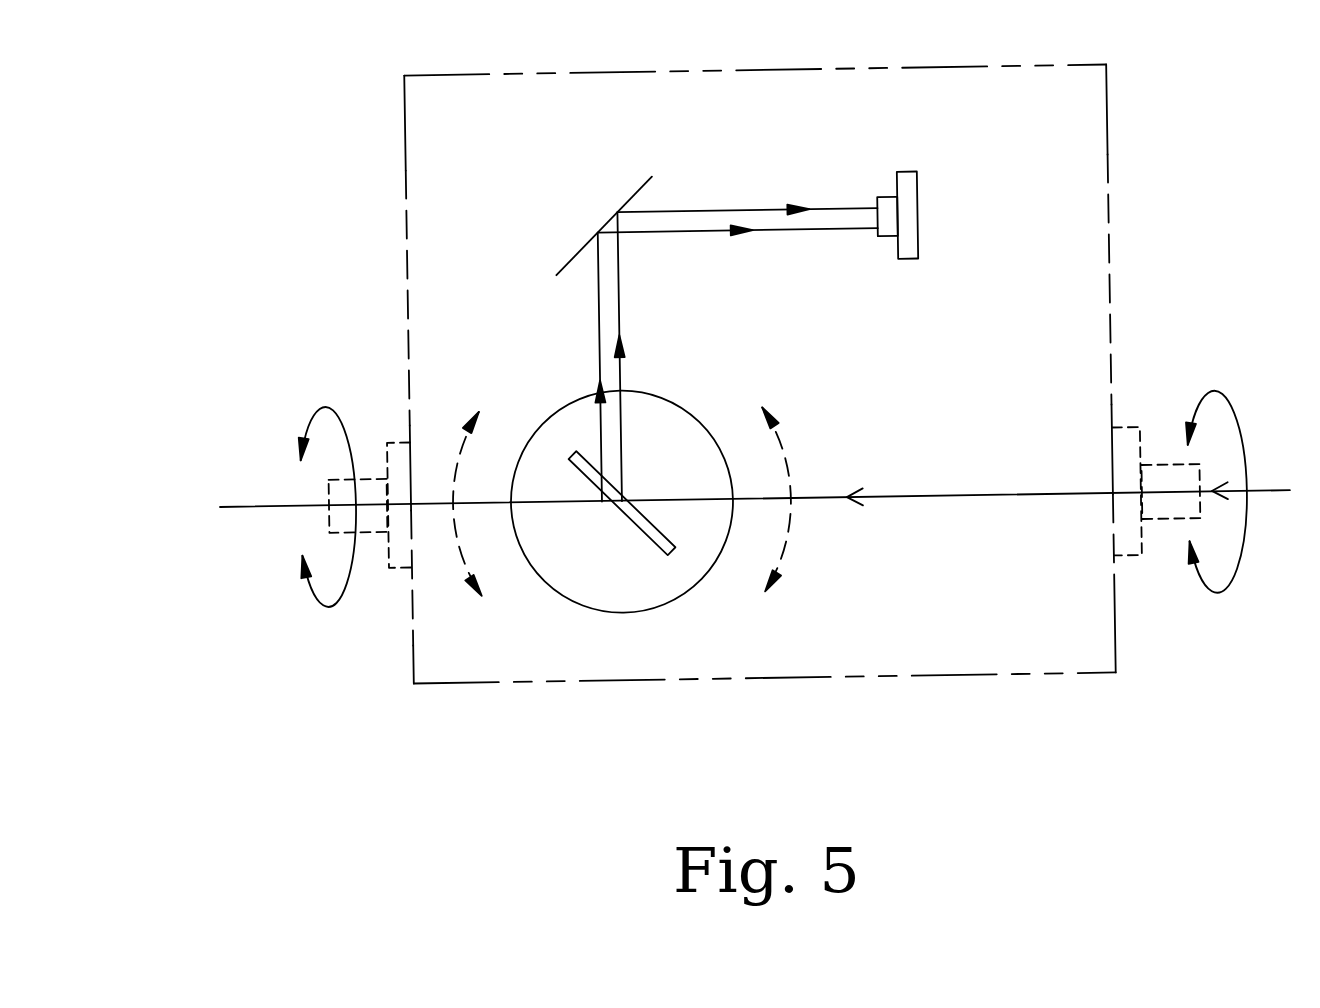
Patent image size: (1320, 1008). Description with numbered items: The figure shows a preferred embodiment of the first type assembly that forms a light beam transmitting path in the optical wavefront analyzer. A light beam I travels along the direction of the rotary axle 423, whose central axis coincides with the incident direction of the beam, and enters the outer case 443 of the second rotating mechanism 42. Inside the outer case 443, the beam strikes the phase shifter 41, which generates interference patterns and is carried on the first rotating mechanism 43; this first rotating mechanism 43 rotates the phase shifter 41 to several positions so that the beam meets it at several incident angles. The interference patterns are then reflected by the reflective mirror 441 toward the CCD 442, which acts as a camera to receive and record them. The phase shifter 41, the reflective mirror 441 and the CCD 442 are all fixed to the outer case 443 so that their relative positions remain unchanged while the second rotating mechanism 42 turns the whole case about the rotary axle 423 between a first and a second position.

The outer case 443 is at (1105, 143).
The reflective mirror 441 is at (578, 242).
The CCD 442 is at (909, 217).
The second rotating mechanism 42 is at (402, 453).
The rotary axle 423 is at (288, 508).
The first rotating mechanism 43 is at (603, 585).
The phase shifter 41 is at (652, 543).
The light beam I is at (1272, 477).